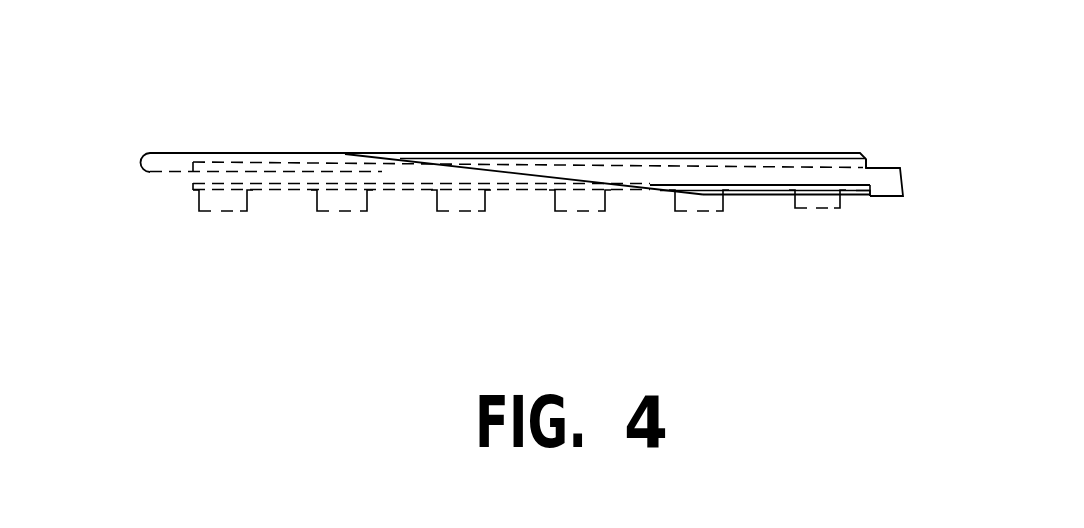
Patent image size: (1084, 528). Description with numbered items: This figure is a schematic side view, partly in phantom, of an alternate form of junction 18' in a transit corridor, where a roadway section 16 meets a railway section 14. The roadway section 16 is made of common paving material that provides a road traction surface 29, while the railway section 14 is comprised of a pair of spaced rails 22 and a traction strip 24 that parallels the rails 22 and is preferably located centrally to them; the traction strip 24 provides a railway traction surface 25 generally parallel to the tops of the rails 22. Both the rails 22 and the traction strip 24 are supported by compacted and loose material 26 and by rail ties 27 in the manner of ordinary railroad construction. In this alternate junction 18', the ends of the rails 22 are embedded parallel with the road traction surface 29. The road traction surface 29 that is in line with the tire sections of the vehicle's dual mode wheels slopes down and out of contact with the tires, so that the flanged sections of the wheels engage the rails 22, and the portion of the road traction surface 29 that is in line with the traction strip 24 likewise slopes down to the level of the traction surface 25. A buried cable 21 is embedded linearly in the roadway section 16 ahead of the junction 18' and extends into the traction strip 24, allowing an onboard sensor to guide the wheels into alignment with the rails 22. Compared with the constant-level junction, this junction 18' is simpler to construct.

The roadway section 16 is at (164, 108).
The railway section 14 is at (868, 108).
The rails 22 is at (710, 152).
The road traction surface 29 is at (272, 153).
The junction 18' is at (448, 269).
The buried cable 21 is at (345, 190).
The rail ties 27 is at (797, 210).
The traction strip 24 is at (901, 196).
The railway traction surface 25 is at (896, 168).
The compacted and loose material 26 is at (865, 205).